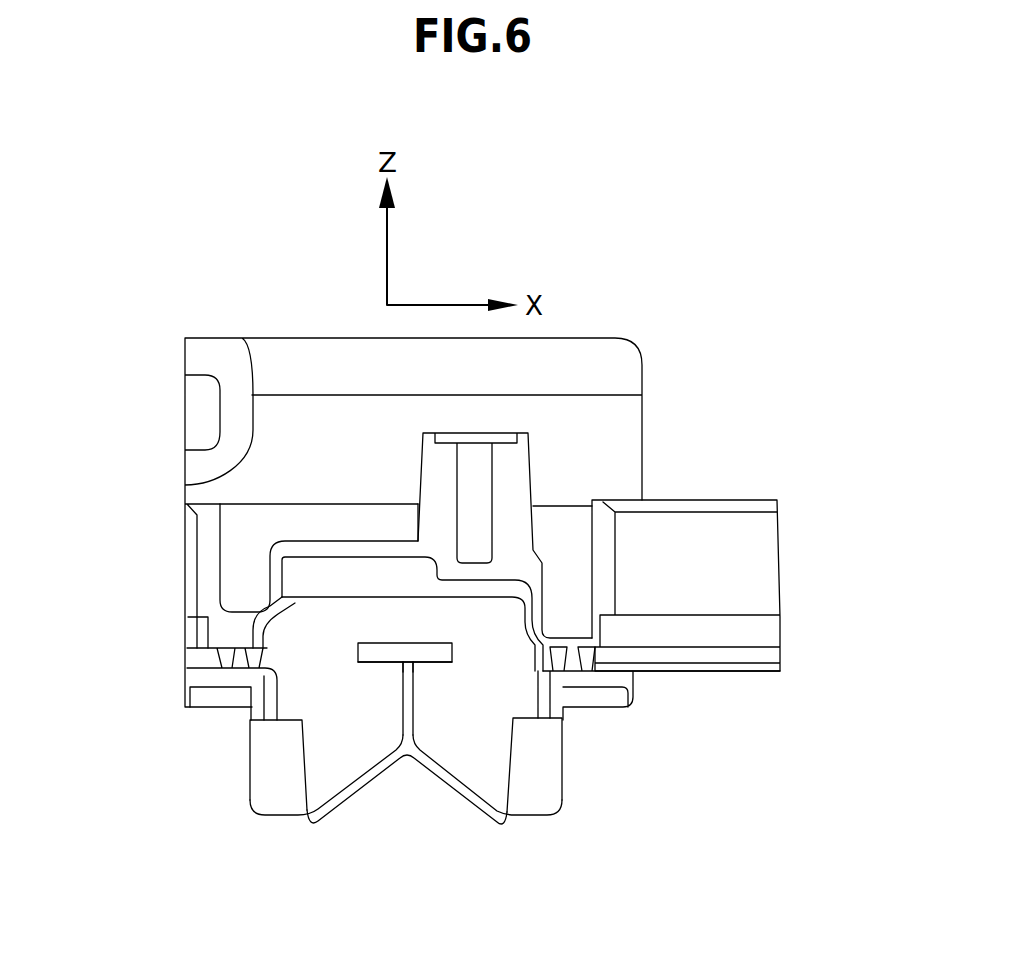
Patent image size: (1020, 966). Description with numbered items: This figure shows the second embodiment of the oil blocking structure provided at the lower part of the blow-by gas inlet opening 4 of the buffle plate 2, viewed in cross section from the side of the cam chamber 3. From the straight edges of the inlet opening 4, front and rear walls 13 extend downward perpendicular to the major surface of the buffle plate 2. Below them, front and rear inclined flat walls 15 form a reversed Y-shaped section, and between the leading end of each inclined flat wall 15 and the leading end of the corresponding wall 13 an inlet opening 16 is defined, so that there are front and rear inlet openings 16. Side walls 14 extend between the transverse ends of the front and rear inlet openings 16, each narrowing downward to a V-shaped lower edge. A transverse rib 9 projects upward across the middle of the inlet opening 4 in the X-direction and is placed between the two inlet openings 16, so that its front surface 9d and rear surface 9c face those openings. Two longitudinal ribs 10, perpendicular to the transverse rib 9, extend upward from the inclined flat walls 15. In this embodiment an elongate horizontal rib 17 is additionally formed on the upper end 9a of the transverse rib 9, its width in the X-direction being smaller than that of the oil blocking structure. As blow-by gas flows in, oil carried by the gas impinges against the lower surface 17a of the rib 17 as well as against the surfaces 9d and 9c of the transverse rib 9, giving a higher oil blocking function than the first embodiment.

The buffle plate 2 is at (763, 655).
The cam chamber 3 is at (737, 878).
The blow-by gas inlet opening 4 is at (285, 650).
The transverse rib 9 is at (385, 735).
The upper end of the transverse rib 9a is at (400, 667).
The rear surface of the transverse rib 9c is at (473, 790).
The front surface of the transverse rib 9d is at (403, 697).
The longitudinal rib 10 is at (278, 790).
The front and rear walls 13 is at (267, 678).
The side wall 14 is at (488, 767).
The inclined flat wall 15 is at (355, 792).
The inlet opening 16 is at (267, 834).
The elongate horizontal rib 17 is at (408, 645).
The lower surface of the rib 17a is at (428, 662).